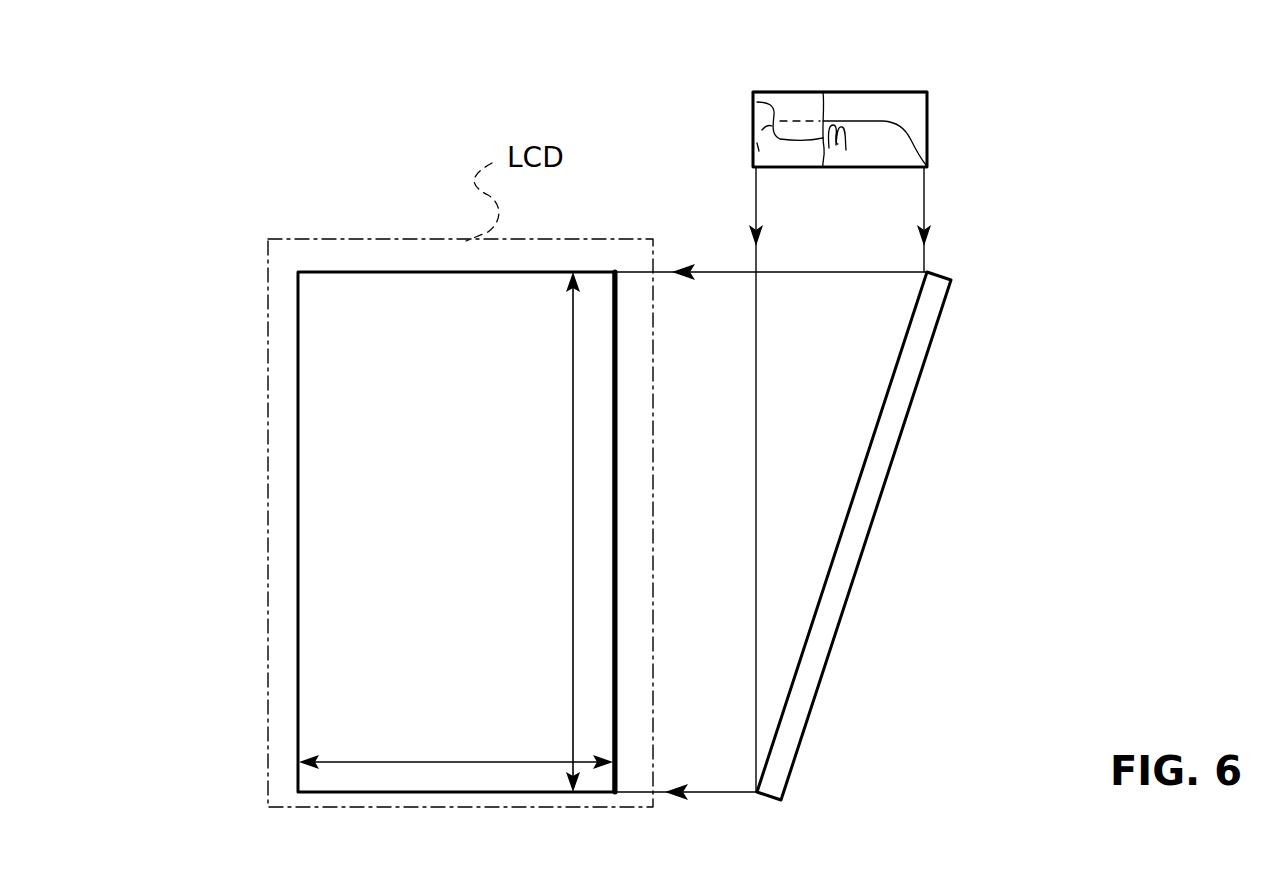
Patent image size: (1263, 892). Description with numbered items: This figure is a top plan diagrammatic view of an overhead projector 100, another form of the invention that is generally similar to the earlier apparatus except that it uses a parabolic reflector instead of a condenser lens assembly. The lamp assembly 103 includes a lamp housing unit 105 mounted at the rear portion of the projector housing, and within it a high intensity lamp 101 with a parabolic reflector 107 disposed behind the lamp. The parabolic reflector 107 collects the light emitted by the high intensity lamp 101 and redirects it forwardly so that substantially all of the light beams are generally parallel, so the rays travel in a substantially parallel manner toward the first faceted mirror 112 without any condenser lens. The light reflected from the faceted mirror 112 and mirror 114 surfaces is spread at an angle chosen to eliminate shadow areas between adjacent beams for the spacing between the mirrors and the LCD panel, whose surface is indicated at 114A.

The overhead projector 100 is at (118, 183).
The high intensity lamp 101 is at (757, 102).
The lamp assembly 103 is at (893, 75).
The lamp housing unit 105 is at (847, 91).
The parabolic reflector 107 is at (885, 122).
The first faceted mirror 112 is at (918, 432).
The faceted mirror 114 is at (287, 465).
The reflective surface of LCD 114A is at (617, 735).